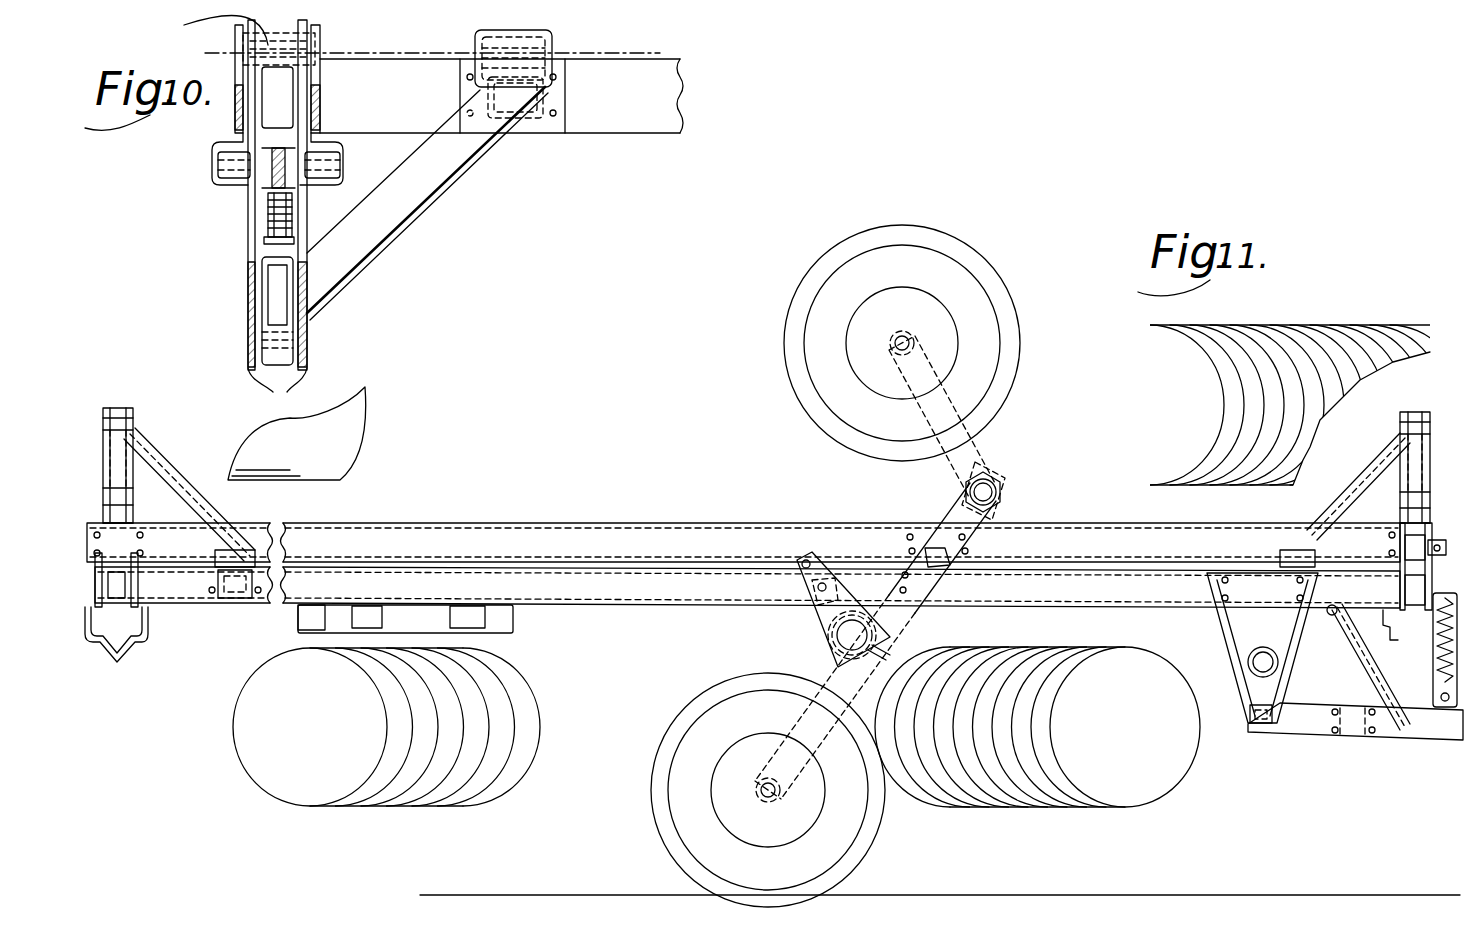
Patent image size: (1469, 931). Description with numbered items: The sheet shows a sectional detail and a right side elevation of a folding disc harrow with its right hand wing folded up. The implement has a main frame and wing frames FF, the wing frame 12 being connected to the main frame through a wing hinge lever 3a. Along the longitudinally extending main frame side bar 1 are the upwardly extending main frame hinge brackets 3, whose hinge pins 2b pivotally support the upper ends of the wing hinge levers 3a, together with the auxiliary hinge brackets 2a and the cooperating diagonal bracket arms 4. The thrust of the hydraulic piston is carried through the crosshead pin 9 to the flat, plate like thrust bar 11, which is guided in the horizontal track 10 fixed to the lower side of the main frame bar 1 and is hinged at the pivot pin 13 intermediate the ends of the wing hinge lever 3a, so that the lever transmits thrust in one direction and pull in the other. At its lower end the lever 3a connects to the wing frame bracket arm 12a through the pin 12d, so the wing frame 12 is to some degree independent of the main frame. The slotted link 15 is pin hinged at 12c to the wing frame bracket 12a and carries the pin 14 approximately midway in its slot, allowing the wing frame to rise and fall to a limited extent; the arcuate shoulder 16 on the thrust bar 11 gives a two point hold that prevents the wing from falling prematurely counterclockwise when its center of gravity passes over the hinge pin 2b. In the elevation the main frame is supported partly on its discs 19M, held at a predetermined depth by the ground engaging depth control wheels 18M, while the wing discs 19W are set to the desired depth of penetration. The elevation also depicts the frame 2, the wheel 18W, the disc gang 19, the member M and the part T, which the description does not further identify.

In FIG. 10, the main frame side bar 1 is at (296, 96).
In FIG. 11, the main frame side bar 1 is at (122, 613).
In FIG. 11, the frame 2 is at (486, 528).
In FIG. 10, the auxiliary hinge bracket 2a is at (548, 92).
In FIG. 11, the auxiliary hinge bracket 2a is at (228, 603).
In FIG. 10, the hinge pin 2b is at (318, 48).
In FIG. 11, the hinge pin 2b is at (250, 550).
In FIG. 10, the main frame hinge bracket 3 is at (235, 112).
In FIG. 11, the main frame hinge bracket 3 is at (95, 588).
In FIG. 10, the wing hinge lever 3a is at (277, 392).
In FIG. 11, the wing hinge lever 3a is at (140, 458).
In FIG. 10, the diagonal bracket arm 4 is at (375, 232).
In FIG. 11, the diagonal bracket arm 4 is at (182, 482).
In FIG. 10, the crosshead pin 9 is at (322, 172).
In FIG. 10, the horizontal track 10 is at (380, 112).
In FIG. 11, the horizontal track 10 is at (120, 652).
In FIG. 10, the thrust bar 11 is at (270, 212).
In FIG. 11, the wing frame 12 is at (688, 526).
In FIG. 10, the wing frame bracket arm 12a is at (255, 296).
In FIG. 11, the wing frame bracket arm 12a is at (108, 412).
In FIG. 11, the pin hinge 12c is at (744, 545).
In FIG. 10, the pin 12d is at (273, 320).
In FIG. 11, the pin 12d is at (133, 425).
In FIG. 10, the pivot pin 13 is at (218, 158).
In FIG. 10, the pin 14 is at (288, 195).
In FIG. 10, the slotted link 15 is at (320, 158).
In FIG. 10, the arcuate shoulder 16 is at (266, 242).
In FIG. 11, the depth control wheels 18M is at (660, 823).
In FIG. 11, the upper wheel 18W is at (1020, 343).
In FIG. 11, the weight stack 19 is at (1173, 788).
In FIG. 11, the main frame discs 19M is at (235, 745).
In FIG. 10, the wing discs 19W is at (340, 432).
In FIG. 11, the wing discs 19W is at (1118, 468).
In FIG. 11, the motor M is at (603, 612).
In FIG. 11, the wing frame FF is at (583, 530).
In FIG. 11, the support leg T is at (1442, 737).